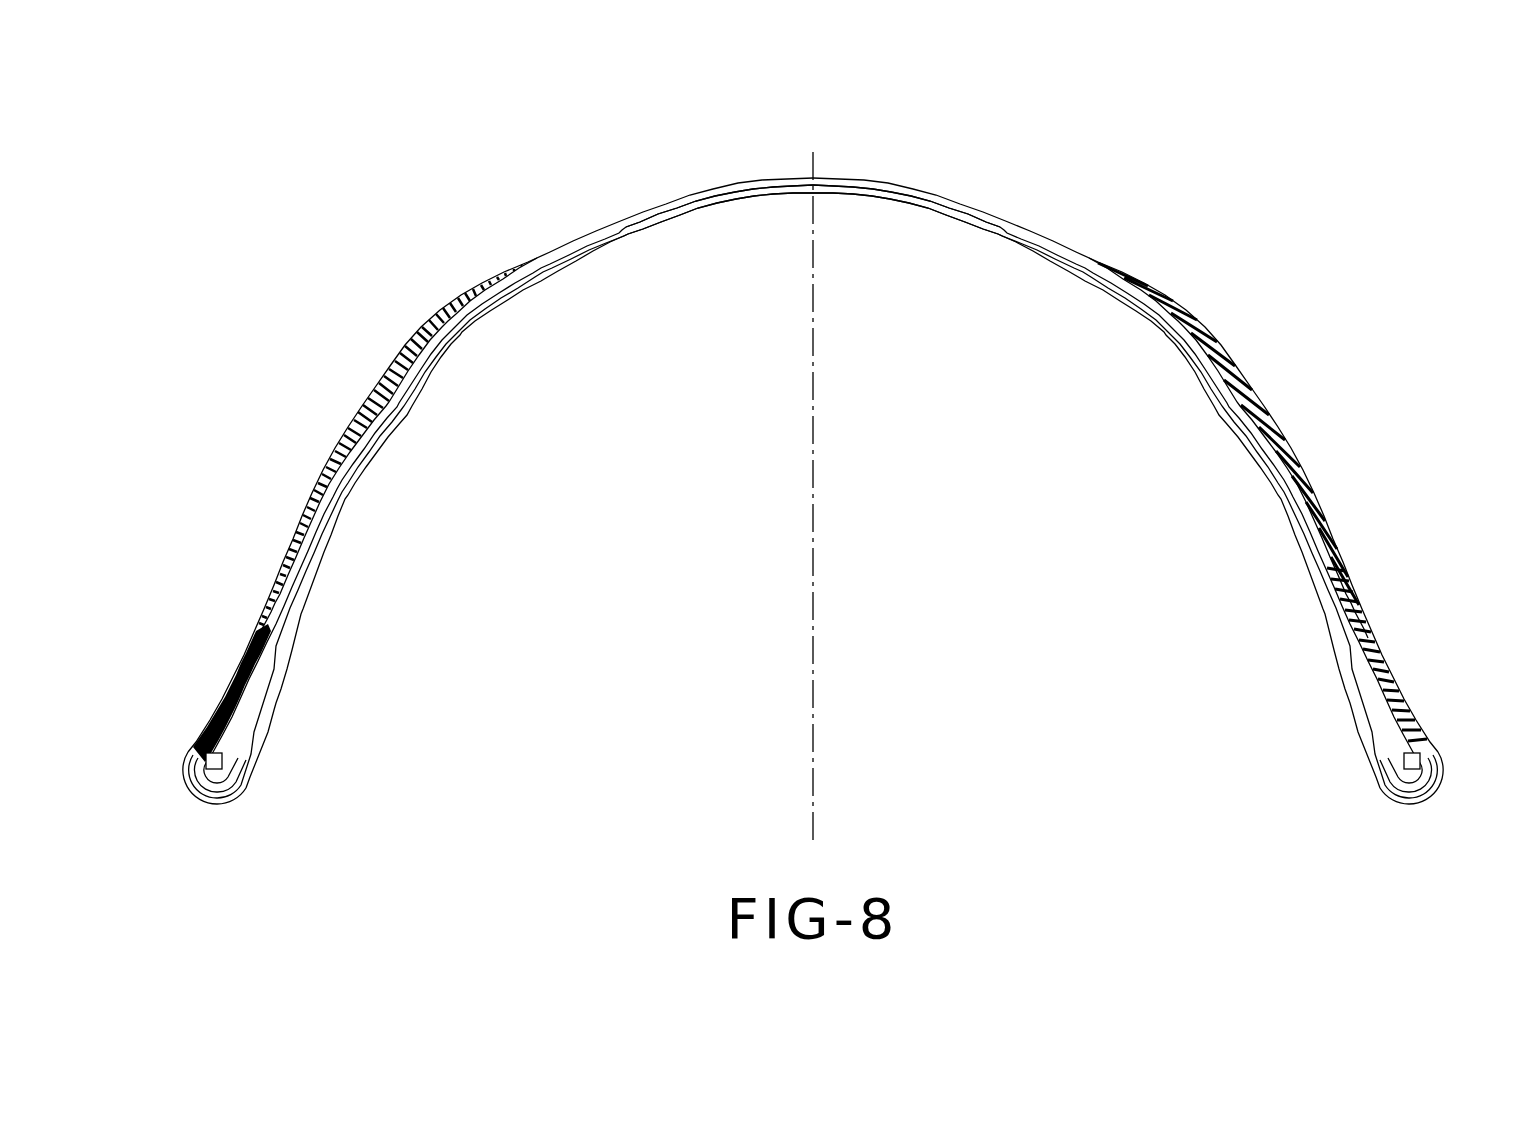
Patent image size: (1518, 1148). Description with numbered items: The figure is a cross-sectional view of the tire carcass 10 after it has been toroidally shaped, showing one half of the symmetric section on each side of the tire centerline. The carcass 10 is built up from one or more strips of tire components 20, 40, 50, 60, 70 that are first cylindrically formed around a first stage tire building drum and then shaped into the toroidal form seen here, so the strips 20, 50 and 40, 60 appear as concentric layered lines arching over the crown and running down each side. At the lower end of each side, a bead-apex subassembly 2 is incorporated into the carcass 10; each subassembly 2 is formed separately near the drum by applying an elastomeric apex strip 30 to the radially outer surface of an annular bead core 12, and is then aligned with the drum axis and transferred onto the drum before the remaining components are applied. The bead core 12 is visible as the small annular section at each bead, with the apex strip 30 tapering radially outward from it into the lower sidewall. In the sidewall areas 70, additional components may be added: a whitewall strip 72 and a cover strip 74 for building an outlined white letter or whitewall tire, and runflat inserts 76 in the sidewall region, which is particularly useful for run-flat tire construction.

The tire carcass 10 is at (1062, 224).
The tire component strip 20 is at (919, 187).
The tire component strip 50 is at (740, 199).
The tire component strip 40 is at (428, 376).
The tire component strip 60 is at (218, 806).
The sidewall area 70 is at (812, 448).
The whitewall strip 72 is at (812, 448).
The cover strip 74 is at (812, 448).
The runflat insert 76 is at (406, 351).
The elastomeric apex strip 30 is at (240, 706).
The bead-apex subassembly 2 is at (242, 782).
The annular bead core 12 is at (224, 757).